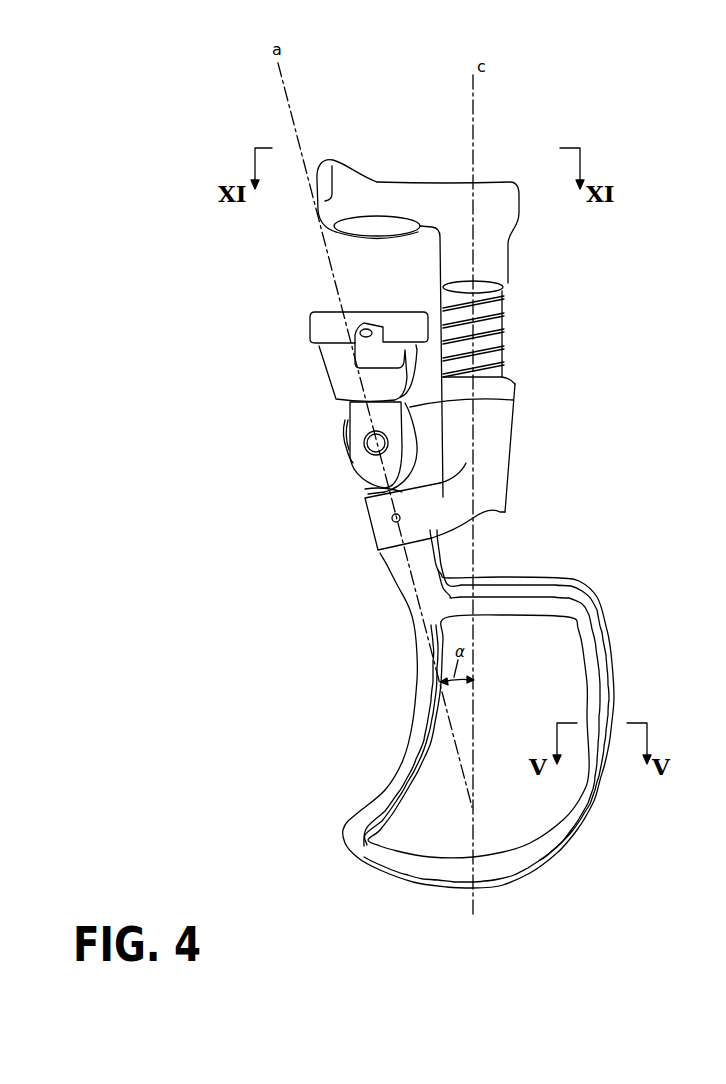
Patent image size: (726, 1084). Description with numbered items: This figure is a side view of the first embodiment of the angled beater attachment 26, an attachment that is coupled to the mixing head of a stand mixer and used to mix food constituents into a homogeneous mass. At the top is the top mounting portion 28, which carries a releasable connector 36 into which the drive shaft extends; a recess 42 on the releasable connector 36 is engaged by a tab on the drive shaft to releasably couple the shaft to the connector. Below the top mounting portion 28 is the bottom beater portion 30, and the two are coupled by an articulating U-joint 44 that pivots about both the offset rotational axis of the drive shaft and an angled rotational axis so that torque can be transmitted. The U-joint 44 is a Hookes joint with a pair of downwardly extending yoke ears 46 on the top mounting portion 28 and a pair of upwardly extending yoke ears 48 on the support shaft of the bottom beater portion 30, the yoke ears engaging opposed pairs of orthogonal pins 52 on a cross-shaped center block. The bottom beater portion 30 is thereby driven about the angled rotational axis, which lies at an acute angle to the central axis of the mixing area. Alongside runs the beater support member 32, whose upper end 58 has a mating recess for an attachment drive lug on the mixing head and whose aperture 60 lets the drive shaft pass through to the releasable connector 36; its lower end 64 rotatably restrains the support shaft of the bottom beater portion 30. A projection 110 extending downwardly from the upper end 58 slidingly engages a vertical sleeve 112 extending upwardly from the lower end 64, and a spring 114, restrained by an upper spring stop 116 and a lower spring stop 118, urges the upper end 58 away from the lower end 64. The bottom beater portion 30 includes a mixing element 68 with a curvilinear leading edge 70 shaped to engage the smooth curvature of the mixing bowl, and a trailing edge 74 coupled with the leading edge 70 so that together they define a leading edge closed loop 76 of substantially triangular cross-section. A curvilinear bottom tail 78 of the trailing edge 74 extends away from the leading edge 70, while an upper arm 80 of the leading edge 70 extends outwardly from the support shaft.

The angled beater attachment 26 is at (652, 165).
The top mounting portion 28 is at (335, 368).
The bottom beater portion 30 is at (408, 608).
The beater support member 32 is at (490, 245).
The releasable connector 36 is at (316, 328).
The recess 42 is at (348, 331).
The articulating U-joint 44 is at (333, 438).
The downwardly extending yoke ears 46 is at (360, 427).
The upwardly extending yoke ears 48 is at (516, 403).
The orthogonal pins 52 is at (358, 448).
The upper end of the beater support member 58 is at (493, 204).
The aperture 60 is at (376, 221).
The lower end of the beater support member 64 is at (492, 508).
The mixing element 68 is at (540, 823).
The curvilinear leading edge 70 is at (613, 665).
The trailing edge 74 is at (412, 752).
The leading edge closed loop 76 is at (437, 884).
The bottom tail 78 is at (345, 843).
The upper arm 80 is at (530, 589).
The projection 110 is at (490, 340).
The vertical sleeve 112 is at (503, 428).
The spring 114 is at (494, 312).
The upper spring stop 116 is at (486, 284).
The lower spring stop 118 is at (505, 378).